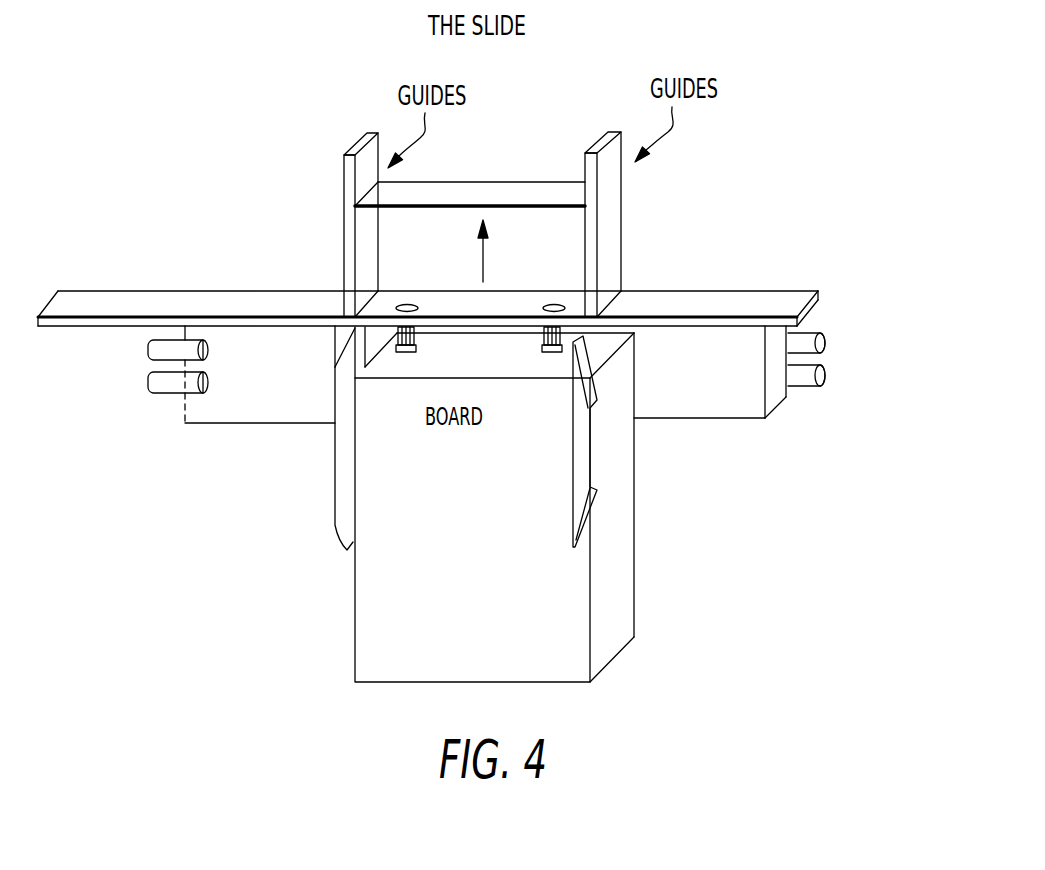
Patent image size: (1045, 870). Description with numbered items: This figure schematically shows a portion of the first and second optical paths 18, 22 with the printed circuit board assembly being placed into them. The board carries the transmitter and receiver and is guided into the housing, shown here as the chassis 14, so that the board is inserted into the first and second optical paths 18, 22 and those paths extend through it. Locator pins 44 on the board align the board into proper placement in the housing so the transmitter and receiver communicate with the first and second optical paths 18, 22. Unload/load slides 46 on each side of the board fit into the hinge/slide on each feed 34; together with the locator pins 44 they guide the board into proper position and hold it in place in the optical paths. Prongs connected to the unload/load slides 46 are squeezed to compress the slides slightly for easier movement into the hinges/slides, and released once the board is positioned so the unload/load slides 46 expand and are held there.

The chassis 14 is at (664, 267).
The first optical path 18 is at (846, 357).
The second optical path 22 is at (848, 313).
The feed 34 is at (283, 386).
The locator pins 44 is at (416, 306).
The unload/load slides 46 is at (692, 523).